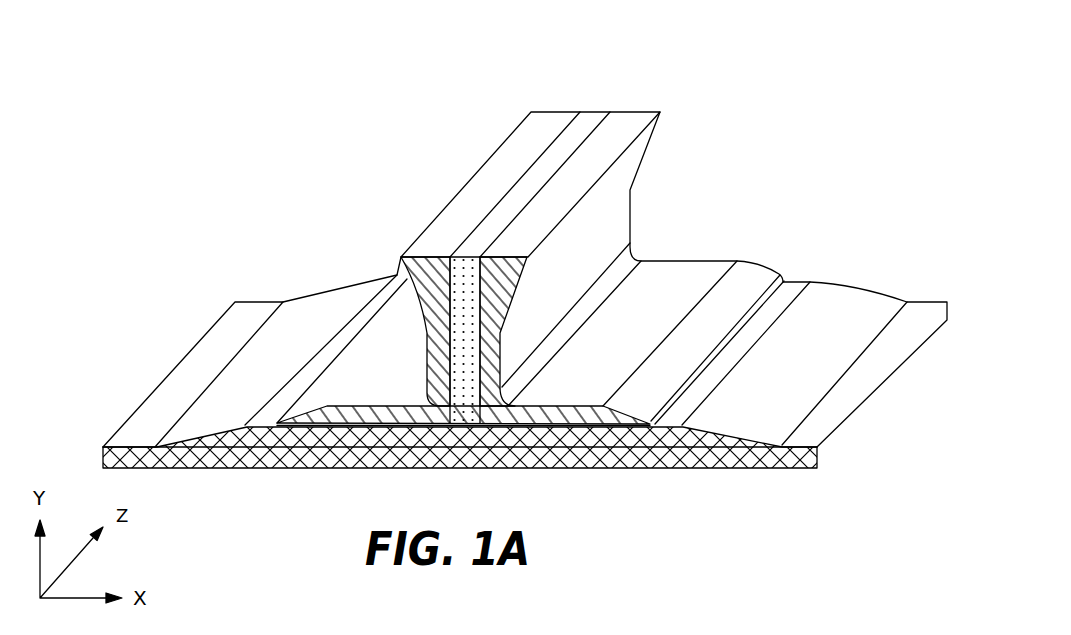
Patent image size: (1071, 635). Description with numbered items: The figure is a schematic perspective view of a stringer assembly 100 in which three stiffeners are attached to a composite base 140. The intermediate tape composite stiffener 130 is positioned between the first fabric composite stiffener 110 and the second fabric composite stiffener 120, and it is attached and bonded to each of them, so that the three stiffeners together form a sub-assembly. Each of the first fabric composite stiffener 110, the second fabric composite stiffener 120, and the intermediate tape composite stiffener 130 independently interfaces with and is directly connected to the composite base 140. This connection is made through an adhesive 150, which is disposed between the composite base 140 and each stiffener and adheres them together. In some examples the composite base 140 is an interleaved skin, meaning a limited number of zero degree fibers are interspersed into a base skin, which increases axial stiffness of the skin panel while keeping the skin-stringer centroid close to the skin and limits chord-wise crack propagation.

The stringer assembly 100 is at (525, 271).
The first fabric composite stiffener 110 is at (615, 212).
The second fabric composite stiffener 120 is at (398, 257).
The intermediate tape composite stiffener 130 is at (582, 133).
The composite base 140 is at (683, 446).
The adhesive 150 is at (588, 430).